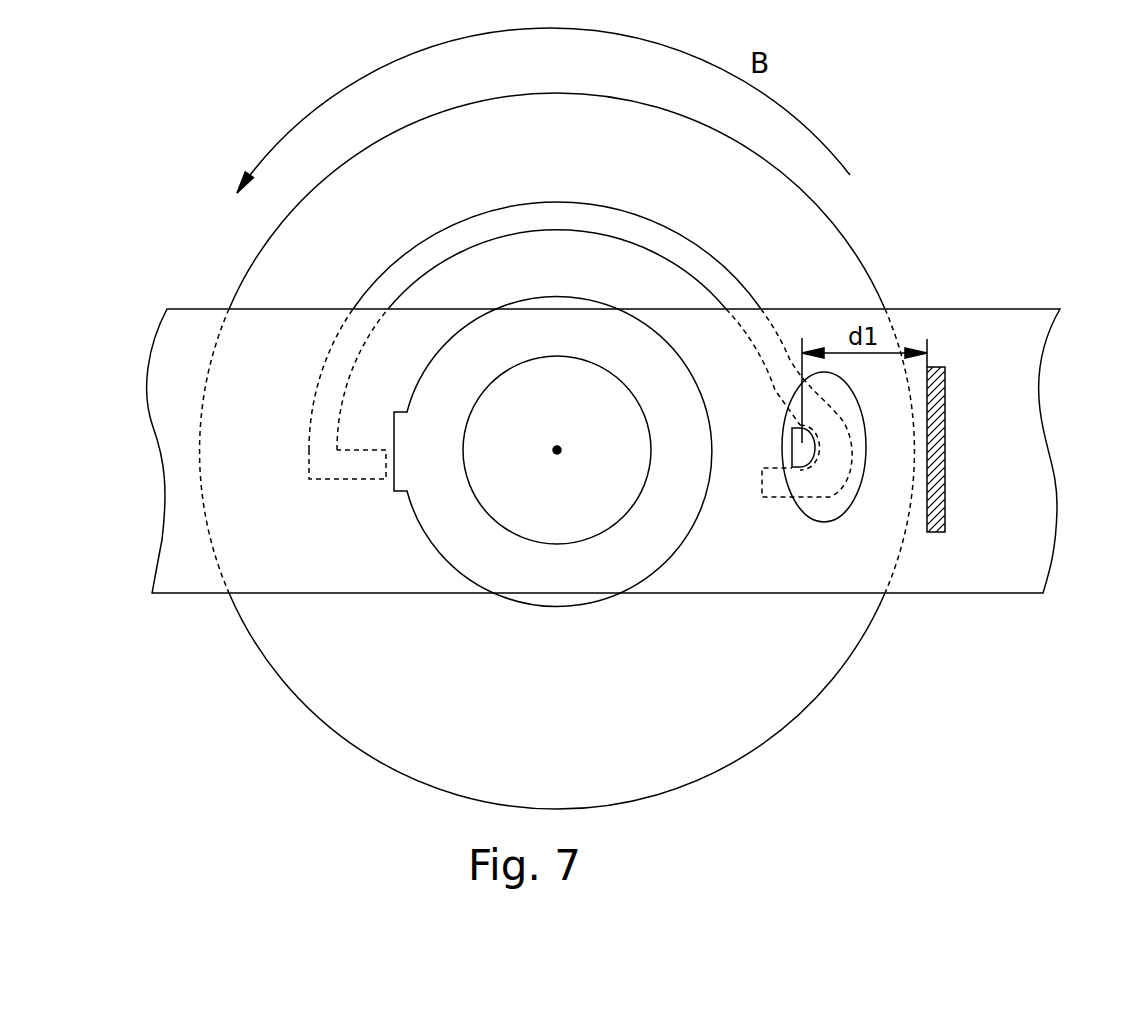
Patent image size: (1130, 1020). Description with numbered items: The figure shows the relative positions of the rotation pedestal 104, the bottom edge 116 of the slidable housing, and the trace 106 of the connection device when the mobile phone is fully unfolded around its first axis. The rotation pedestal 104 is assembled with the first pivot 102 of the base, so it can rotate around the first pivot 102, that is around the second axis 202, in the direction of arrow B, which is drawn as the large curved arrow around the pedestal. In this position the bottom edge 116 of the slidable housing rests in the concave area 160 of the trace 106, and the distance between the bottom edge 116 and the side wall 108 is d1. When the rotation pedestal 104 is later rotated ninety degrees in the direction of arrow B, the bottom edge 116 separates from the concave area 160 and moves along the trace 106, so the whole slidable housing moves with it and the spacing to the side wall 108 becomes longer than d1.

The first pivot 102 is at (638, 548).
The rotation pedestal 104 is at (950, 328).
The trace 106 is at (432, 292).
The side wall 108 is at (945, 463).
The bottom edge 116 is at (802, 455).
The concave area 160 is at (840, 518).
The second axis 202 is at (557, 450).